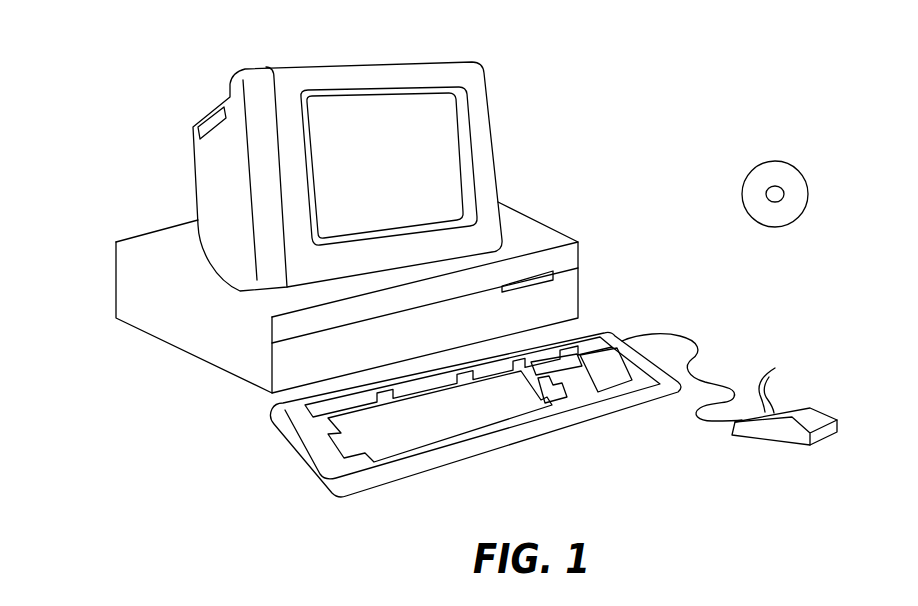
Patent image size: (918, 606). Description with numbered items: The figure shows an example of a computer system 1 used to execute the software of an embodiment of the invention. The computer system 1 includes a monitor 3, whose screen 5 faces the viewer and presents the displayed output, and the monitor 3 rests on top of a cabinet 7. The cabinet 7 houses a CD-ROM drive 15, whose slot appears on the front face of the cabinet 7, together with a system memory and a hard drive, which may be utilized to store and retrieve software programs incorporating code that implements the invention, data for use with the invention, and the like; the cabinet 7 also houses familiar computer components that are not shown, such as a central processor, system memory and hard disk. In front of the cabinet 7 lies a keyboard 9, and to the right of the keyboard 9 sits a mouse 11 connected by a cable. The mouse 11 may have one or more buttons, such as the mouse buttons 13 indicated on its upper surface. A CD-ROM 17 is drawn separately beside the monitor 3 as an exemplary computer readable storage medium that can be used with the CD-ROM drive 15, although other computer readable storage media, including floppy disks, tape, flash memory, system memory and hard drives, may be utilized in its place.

The computer system 1 is at (700, 38).
The monitor 3 is at (495, 180).
The screen 5 is at (453, 128).
The cabinet 7 is at (237, 290).
The keyboard 9 is at (473, 455).
The mouse 11 is at (823, 412).
The mouse buttons 13 is at (782, 381).
The CD-ROM drive 15 is at (552, 271).
The CD-ROM 17 is at (792, 165).